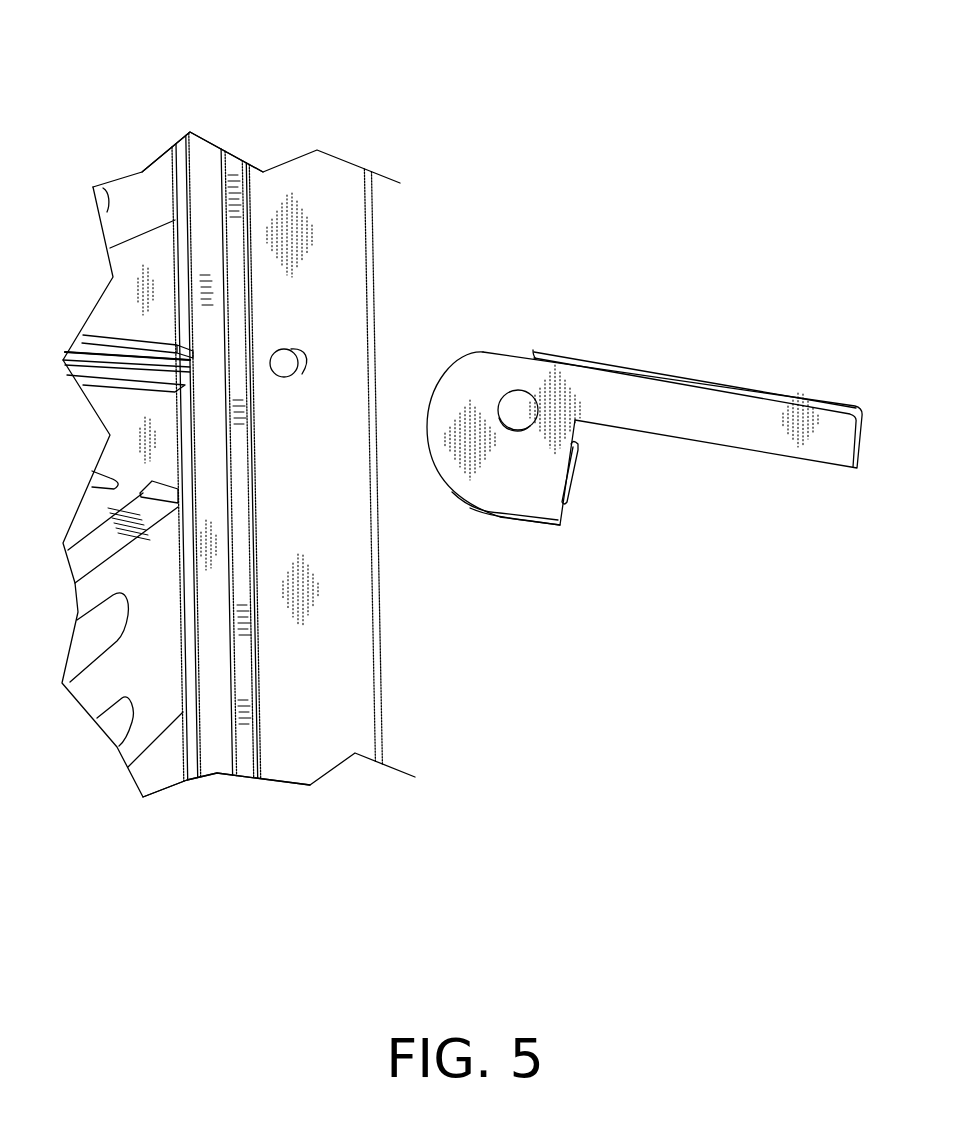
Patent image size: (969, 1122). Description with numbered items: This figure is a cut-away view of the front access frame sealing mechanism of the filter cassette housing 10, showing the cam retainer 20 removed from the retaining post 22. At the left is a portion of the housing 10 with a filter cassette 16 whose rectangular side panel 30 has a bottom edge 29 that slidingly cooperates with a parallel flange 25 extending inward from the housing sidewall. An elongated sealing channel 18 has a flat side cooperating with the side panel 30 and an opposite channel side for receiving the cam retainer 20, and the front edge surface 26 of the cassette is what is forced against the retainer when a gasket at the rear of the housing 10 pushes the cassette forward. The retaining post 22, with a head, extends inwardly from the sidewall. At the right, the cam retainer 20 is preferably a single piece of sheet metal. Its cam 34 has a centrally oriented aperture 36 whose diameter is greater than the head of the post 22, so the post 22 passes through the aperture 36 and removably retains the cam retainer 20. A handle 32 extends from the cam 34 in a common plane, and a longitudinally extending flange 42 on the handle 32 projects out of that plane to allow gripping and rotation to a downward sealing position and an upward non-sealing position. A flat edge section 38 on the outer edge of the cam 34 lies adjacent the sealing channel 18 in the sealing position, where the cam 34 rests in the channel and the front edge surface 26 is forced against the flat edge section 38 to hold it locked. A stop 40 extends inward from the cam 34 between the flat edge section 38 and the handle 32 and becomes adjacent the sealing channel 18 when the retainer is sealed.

The filter cassette housing 10 is at (352, 143).
The filter cassette 16 is at (148, 665).
The sealing channel 18 is at (218, 755).
The cam retainer 20 is at (722, 427).
The retaining post 22 is at (290, 356).
The parallel flange 25 is at (155, 360).
The front edge surface 26 is at (183, 200).
The bottom edge 29 is at (113, 358).
The side panel 30 is at (123, 457).
The handle 32 is at (633, 392).
The cam 34 is at (427, 427).
The aperture 36 is at (510, 390).
The flat edge section 38 is at (525, 520).
The stop 40 is at (582, 480).
The flange 42 is at (703, 380).